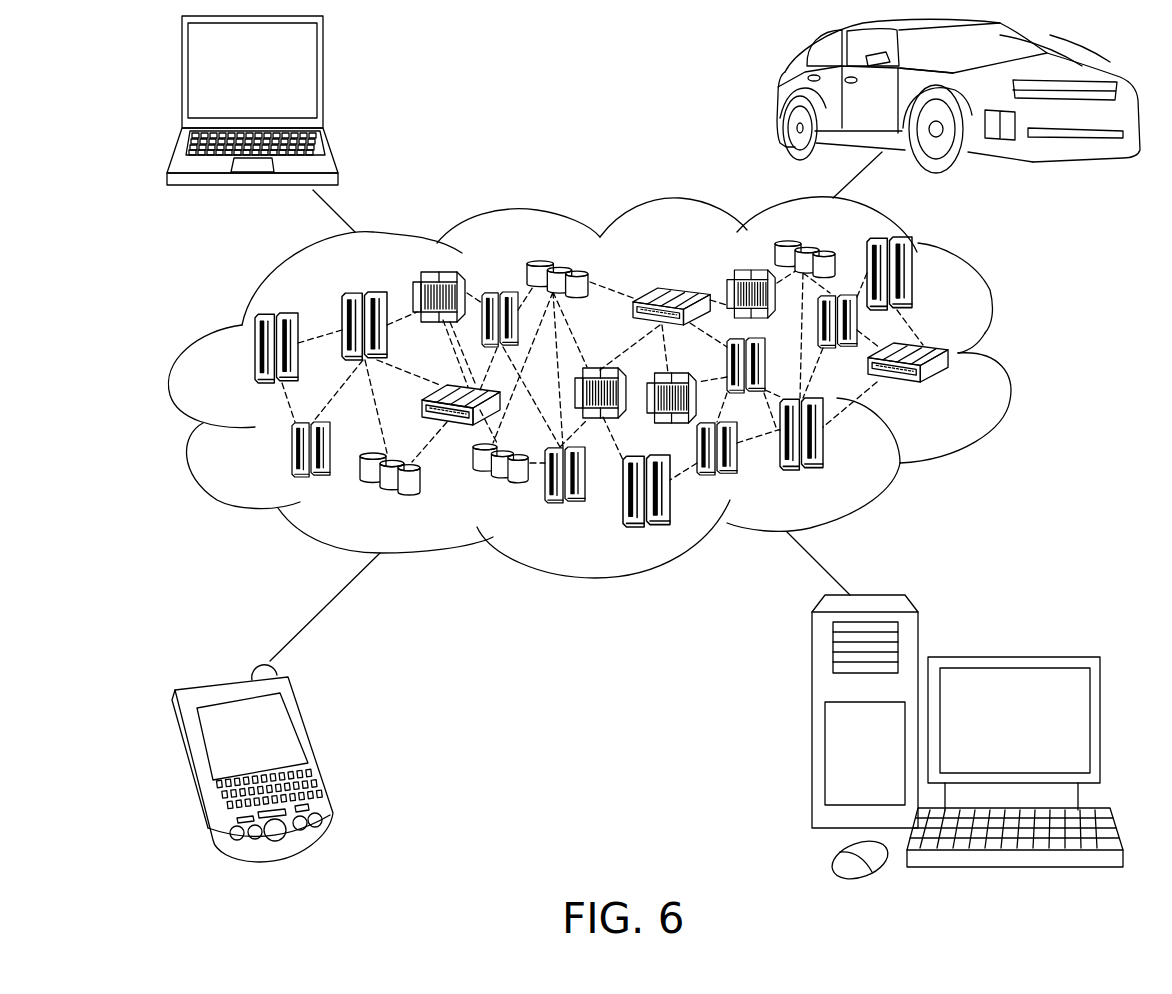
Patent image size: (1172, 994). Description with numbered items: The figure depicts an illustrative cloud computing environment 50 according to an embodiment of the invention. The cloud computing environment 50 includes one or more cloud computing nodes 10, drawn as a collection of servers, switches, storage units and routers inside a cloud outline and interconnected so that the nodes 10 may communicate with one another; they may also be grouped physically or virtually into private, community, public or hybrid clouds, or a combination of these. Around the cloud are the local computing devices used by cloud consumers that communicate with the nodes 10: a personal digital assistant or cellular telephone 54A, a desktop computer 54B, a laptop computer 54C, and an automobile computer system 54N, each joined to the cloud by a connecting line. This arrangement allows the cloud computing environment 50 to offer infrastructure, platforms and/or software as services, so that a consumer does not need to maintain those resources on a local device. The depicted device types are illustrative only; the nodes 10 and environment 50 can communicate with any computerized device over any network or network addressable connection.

The cloud computing node 10 is at (953, 391).
The cloud computing environment 50 is at (622, 387).
The personal digital assistant or cellular telephone 54A is at (317, 750).
The desktop computer 54B is at (1012, 657).
The laptop computer 54C is at (329, 82).
The automobile computer system 54N is at (788, 98).